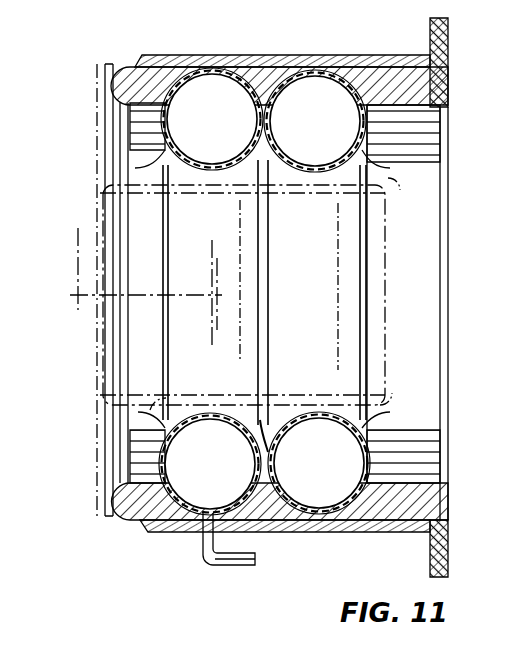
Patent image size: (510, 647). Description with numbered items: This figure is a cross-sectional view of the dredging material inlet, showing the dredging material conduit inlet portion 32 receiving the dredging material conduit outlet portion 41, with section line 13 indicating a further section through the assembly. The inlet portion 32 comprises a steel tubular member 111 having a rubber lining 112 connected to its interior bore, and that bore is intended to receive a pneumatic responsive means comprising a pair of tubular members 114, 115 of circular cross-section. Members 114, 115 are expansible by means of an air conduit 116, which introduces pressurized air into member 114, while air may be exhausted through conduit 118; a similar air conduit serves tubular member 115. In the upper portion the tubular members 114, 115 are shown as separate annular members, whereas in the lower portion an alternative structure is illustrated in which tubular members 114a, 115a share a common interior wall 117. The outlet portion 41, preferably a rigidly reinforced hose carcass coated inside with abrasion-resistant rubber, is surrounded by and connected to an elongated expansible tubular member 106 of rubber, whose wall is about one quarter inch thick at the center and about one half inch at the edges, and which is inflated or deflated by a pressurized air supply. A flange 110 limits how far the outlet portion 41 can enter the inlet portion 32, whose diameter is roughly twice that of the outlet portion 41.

The section line 13- 13 is at (78, 22).
The dredging material conduit inlet portion 32 is at (178, 56).
The flange 110 is at (95, 141).
The tubular member 114 is at (167, 128).
The tubular member 115 is at (287, 86).
The tubular member 114a is at (167, 471).
The tubular member 115a is at (360, 470).
The elongated expansible tubular member 106 is at (180, 398).
The dredging material conduit outlet portion 41 is at (265, 386).
The common interior wall 117 is at (266, 470).
The rubber lining 112 is at (122, 522).
The steel tubular member 111 is at (142, 530).
The air conduit 116 is at (203, 541).
The conduit 118 is at (243, 548).